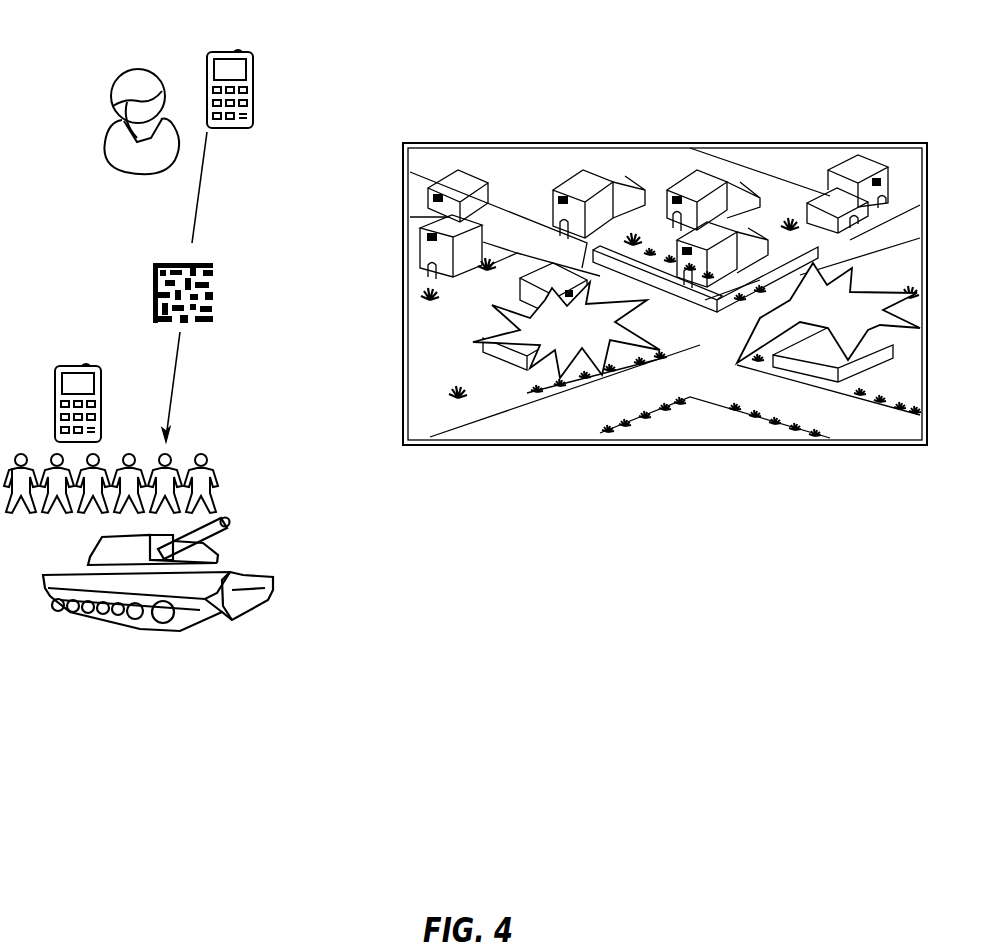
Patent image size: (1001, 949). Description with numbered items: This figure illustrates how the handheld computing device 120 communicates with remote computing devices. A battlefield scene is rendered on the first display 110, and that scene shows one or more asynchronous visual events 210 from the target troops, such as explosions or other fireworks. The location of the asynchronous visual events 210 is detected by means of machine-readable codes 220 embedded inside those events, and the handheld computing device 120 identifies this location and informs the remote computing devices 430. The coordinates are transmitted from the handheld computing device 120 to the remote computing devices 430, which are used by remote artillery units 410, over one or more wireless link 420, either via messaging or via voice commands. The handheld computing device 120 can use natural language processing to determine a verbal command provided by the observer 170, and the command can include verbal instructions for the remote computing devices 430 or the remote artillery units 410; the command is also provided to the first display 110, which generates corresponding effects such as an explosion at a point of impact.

The first display 110 is at (647, 132).
The handheld computing device 120 is at (226, 52).
The observer 170 is at (138, 68).
The asynchronous visual events 210 is at (587, 340).
The machine-readable codes 220 is at (161, 262).
The remote artillery units 410 is at (240, 479).
The wireless link 420 is at (174, 387).
The remote computing devices 430 is at (74, 366).